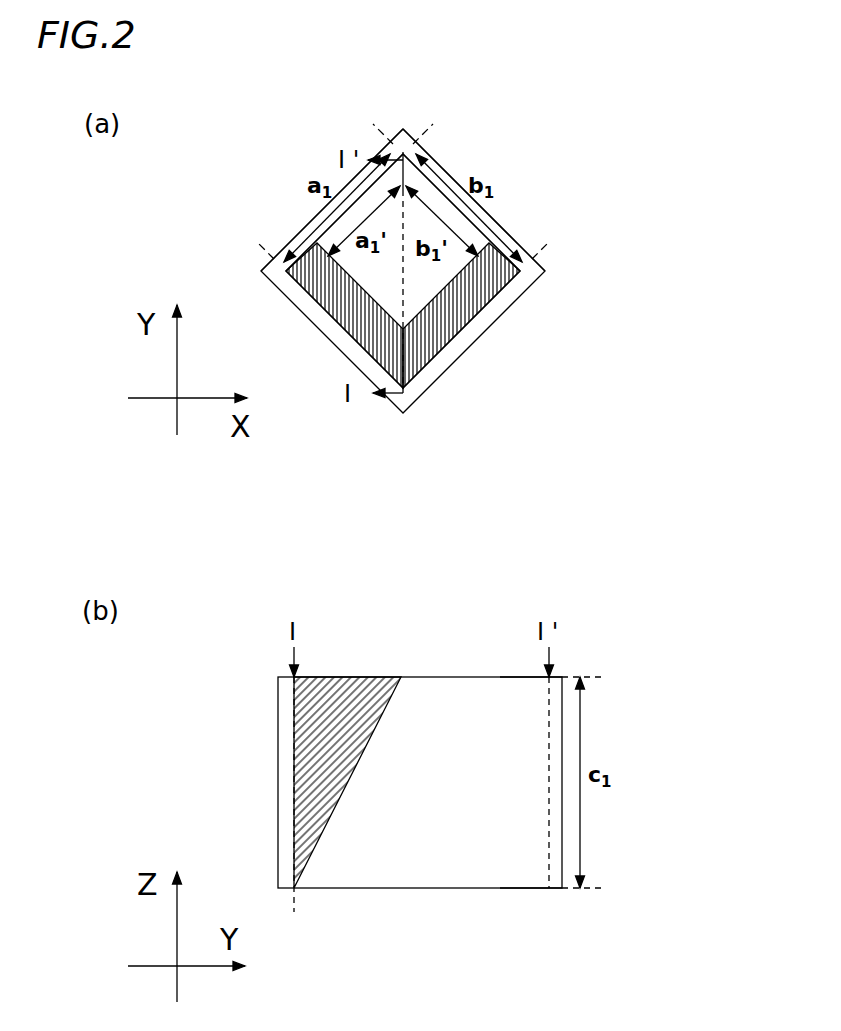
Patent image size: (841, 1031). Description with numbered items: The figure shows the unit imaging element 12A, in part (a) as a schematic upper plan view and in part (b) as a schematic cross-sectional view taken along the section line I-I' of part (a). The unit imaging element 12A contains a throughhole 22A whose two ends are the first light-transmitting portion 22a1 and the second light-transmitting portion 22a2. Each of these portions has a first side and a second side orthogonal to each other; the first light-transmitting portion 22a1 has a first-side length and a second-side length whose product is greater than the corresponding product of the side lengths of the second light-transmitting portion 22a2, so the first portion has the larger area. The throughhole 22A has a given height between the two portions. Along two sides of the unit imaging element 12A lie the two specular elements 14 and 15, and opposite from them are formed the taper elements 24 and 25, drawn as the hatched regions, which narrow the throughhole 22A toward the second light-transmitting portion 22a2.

The unit imaging element 12A is at (519, 193).
The specular element 14 is at (333, 226).
The specular element 15 is at (482, 246).
The throughhole 22A is at (414, 338).
The first light-transmitting portion 22a1 is at (528, 888).
The second light-transmitting portion 22a2 is at (525, 677).
The taper element 24 is at (384, 350).
The taper element 25 is at (456, 320).